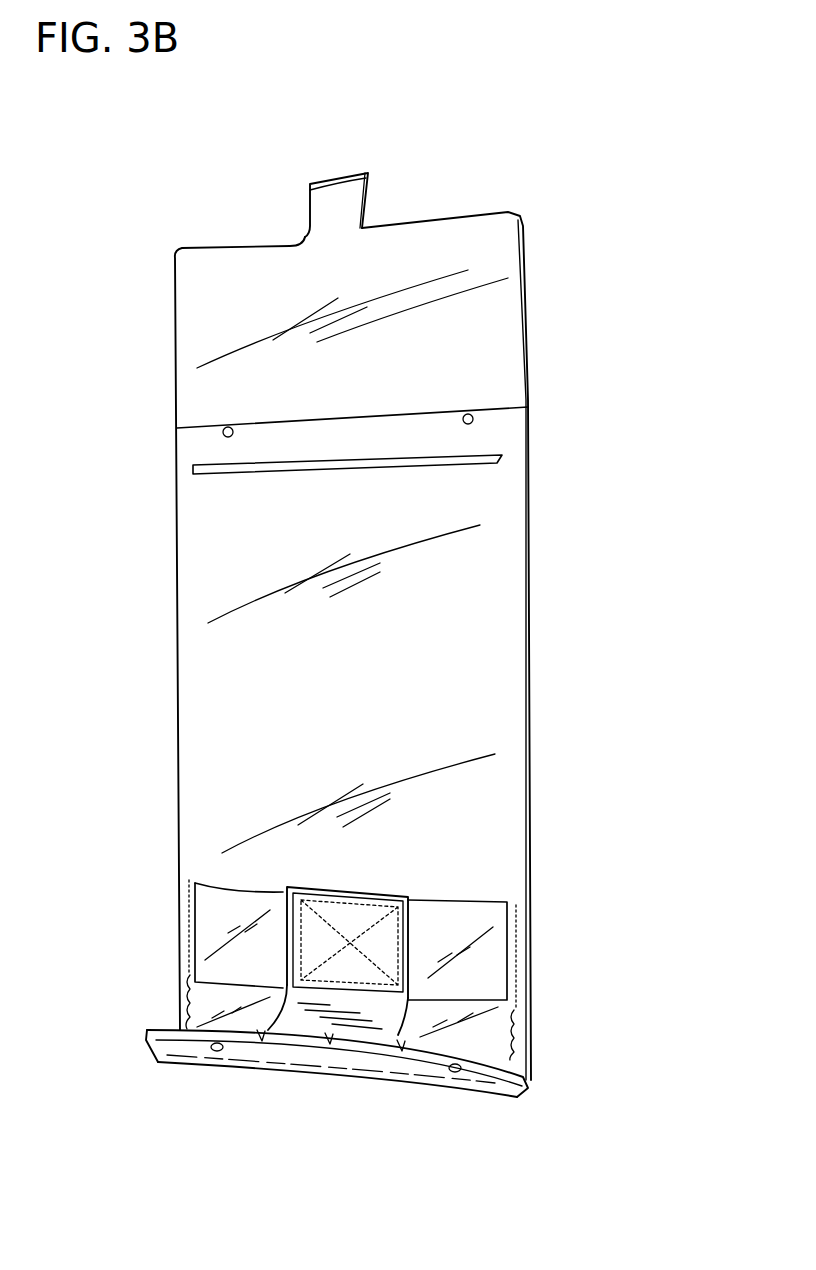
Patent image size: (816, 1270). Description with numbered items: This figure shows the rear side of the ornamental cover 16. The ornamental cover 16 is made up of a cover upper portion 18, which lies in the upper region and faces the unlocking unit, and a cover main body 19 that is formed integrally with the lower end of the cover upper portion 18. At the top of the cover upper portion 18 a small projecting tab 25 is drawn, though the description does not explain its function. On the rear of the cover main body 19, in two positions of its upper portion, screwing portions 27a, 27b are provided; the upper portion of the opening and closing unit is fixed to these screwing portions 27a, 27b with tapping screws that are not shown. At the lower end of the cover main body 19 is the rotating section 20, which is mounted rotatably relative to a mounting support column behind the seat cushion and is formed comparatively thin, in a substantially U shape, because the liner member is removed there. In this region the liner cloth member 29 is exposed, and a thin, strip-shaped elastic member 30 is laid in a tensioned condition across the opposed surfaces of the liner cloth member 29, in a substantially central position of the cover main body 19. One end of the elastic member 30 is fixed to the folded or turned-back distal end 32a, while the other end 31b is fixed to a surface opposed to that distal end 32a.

The ornamental cover 16 is at (140, 462).
The cover upper portion 18 is at (510, 280).
The cover main body 19 is at (495, 608).
The rotating section 20 is at (535, 1023).
The hanging tab 25 is at (368, 175).
The screwing portion 27a is at (223, 436).
The screwing portion 27b is at (474, 423).
The liner cloth member 29 is at (485, 968).
The elastic member 30 is at (303, 1017).
The other end 31b is at (403, 930).
The distal end 32a is at (348, 1050).